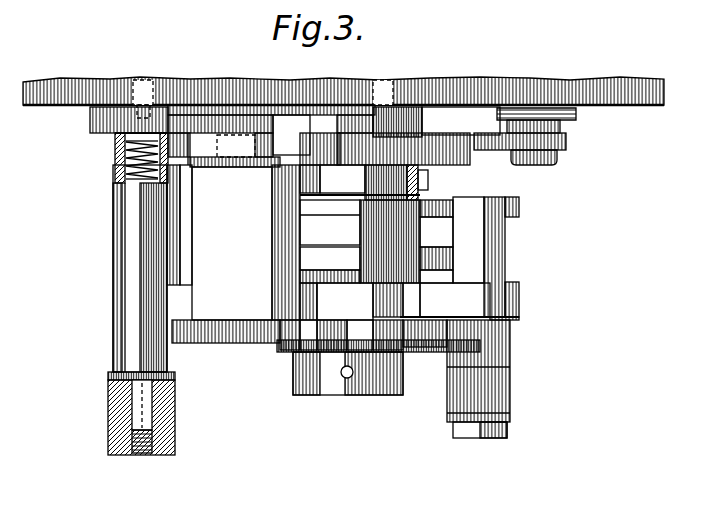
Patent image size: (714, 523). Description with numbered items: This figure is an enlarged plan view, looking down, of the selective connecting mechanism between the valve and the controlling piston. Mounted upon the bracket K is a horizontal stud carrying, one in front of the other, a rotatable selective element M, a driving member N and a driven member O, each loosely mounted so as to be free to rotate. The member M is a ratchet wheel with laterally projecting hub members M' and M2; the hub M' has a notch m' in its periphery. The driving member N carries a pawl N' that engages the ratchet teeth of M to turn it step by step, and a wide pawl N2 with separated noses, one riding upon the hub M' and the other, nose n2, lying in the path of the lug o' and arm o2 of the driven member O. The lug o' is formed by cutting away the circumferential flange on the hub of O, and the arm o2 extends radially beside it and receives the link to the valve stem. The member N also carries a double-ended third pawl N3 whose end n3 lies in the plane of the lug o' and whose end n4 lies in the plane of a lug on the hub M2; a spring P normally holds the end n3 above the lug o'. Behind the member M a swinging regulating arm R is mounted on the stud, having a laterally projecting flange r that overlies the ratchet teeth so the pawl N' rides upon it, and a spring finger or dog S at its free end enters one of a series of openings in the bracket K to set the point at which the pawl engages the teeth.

The bracket K is at (70, 90).
The swinging arm R is at (92, 133).
The spring finger or dog S is at (125, 163).
The laterally projecting flange r is at (291, 136).
The pawl N' is at (224, 165).
The wide pawl N2 is at (242, 257).
The rotatable selective element M is at (499, 128).
The hub member M' is at (388, 166).
The notch m' is at (515, 170).
The hub member M2 is at (347, 202).
The driving member N is at (330, 265).
The spring P is at (440, 242).
The pawl end n4 is at (440, 203).
The third pawl N3 is at (529, 258).
The nose n2 is at (317, 303).
The stop or lug o' is at (368, 316).
The pawl end n3 is at (459, 300).
The driven member O is at (342, 342).
The arm o2 is at (456, 379).